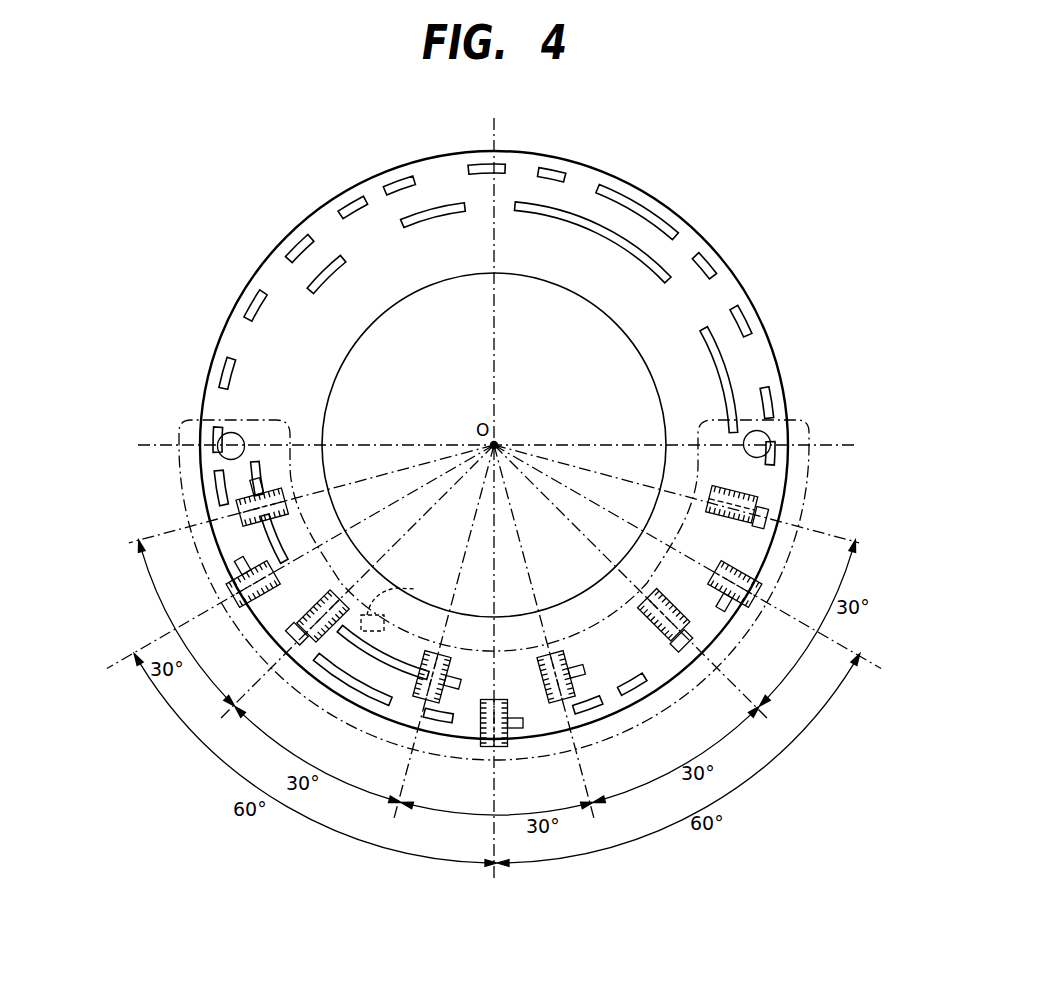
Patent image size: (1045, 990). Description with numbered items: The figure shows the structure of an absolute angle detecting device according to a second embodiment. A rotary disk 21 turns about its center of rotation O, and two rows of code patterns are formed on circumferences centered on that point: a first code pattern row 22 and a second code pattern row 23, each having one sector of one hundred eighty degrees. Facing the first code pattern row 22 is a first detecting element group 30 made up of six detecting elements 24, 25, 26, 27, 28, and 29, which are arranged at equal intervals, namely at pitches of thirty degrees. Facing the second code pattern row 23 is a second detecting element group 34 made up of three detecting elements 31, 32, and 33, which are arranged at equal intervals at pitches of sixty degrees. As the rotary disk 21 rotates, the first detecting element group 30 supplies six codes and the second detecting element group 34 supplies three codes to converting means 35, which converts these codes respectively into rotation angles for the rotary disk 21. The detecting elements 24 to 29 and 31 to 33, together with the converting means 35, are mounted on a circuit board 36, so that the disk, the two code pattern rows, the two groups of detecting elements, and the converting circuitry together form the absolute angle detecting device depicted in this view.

The rotary disk 21 is at (698, 242).
The first code pattern row 22 is at (577, 212).
The second code pattern row 23 is at (636, 207).
The detecting element 24 is at (758, 496).
The detecting element 25 is at (655, 655).
The detecting element 26 is at (556, 703).
The detecting element 27 is at (430, 704).
The detecting element 28 is at (313, 592).
The detecting element 29 is at (241, 512).
The first detecting element group 30 is at (473, 599).
The detecting element 31 is at (770, 573).
The detecting element 32 is at (493, 748).
The detecting element 33 is at (226, 568).
The second detecting element group 34 is at (489, 646).
The converting means 35 is at (386, 614).
The circuit board 36 is at (818, 470).